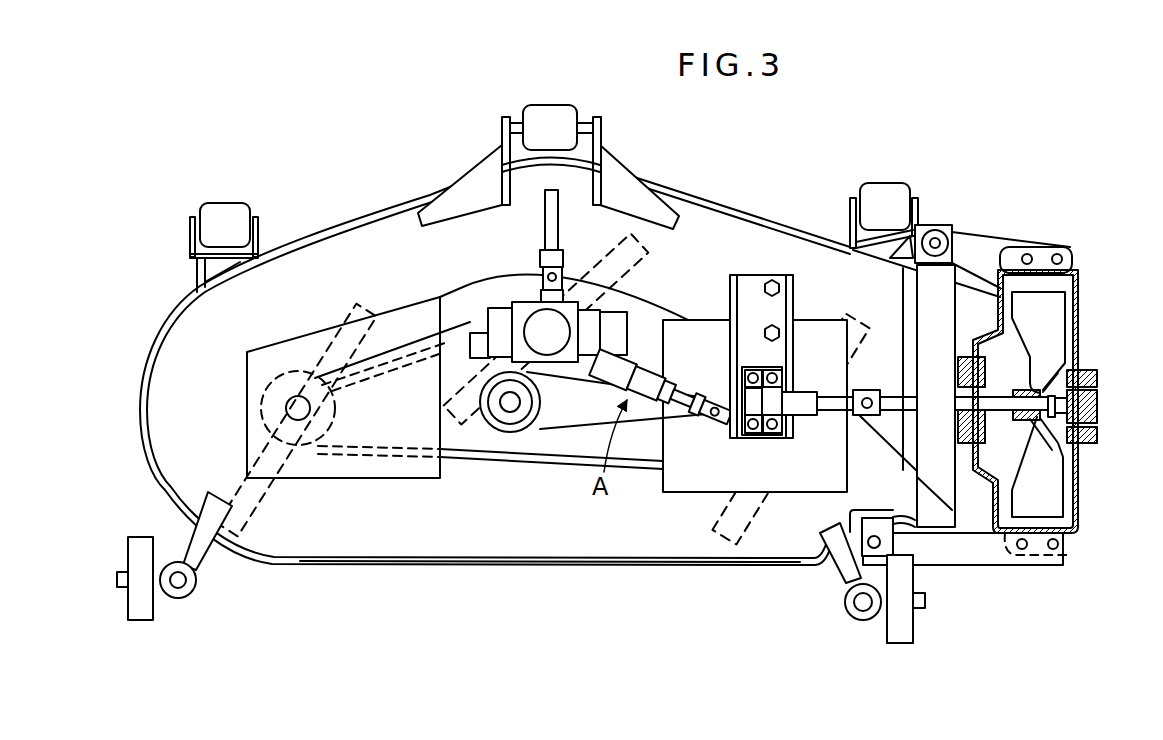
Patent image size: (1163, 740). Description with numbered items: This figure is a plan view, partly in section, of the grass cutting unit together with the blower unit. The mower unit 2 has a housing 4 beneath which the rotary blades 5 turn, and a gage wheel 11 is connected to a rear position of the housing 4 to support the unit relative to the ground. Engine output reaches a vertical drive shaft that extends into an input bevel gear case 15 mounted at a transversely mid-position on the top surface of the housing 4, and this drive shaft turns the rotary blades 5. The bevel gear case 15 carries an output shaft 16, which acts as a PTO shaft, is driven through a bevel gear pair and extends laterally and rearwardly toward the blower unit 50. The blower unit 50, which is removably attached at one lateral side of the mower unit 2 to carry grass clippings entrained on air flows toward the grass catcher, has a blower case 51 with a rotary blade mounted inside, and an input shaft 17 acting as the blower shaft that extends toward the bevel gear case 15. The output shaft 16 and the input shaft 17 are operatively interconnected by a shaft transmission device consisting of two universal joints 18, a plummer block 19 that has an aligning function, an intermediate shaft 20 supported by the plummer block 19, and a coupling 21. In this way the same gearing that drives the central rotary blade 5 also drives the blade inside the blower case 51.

The mower unit 2 is at (393, 190).
The housing 4 is at (532, 543).
The rotary blades 5 is at (366, 303).
The gage wheel 11 is at (145, 625).
The input bevel gear case 15 is at (528, 303).
The output shaft 16 is at (603, 370).
The input shaft 17 is at (903, 395).
The universal joints 18 is at (704, 380).
The plummer block 19 is at (745, 402).
The intermediate shaft 20 is at (774, 392).
The coupling 21 is at (848, 418).
The blower unit 50 is at (1084, 298).
The blower case 51 is at (1080, 341).